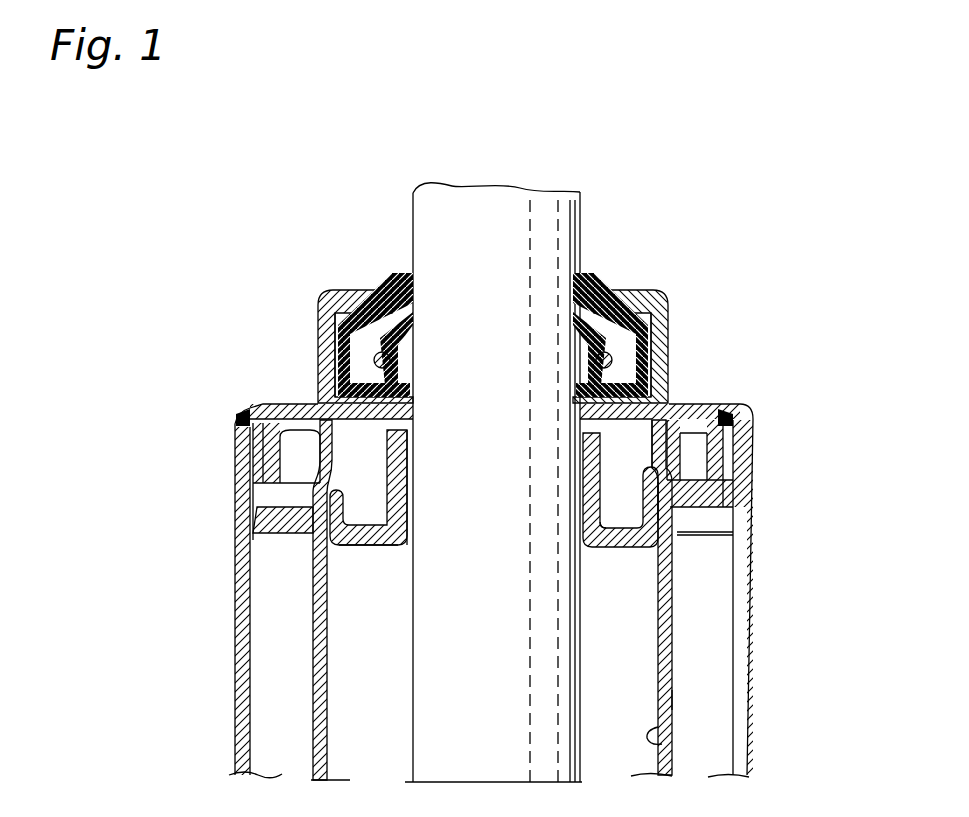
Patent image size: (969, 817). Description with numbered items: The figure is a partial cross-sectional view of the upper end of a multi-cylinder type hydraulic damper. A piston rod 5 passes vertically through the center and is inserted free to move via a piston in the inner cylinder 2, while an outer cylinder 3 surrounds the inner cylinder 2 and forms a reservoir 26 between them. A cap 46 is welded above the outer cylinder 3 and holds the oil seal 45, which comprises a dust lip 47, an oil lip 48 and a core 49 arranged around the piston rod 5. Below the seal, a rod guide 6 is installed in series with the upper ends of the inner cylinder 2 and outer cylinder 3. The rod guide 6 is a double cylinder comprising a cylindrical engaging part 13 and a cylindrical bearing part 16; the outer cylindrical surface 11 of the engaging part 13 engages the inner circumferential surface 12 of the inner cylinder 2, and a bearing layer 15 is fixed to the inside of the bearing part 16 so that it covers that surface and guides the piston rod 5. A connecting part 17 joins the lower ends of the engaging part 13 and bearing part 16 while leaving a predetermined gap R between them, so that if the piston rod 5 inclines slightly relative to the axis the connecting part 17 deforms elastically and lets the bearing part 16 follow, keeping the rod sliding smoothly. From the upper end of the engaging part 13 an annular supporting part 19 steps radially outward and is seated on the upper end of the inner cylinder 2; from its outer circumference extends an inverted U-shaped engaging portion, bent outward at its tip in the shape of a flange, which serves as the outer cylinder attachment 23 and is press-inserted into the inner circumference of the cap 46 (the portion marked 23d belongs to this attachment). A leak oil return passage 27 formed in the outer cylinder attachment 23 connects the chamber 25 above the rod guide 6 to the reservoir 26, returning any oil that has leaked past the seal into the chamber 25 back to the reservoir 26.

The piston rod 5 is at (507, 217).
The oil seal 45 is at (594, 268).
The dust lip 47 is at (600, 290).
The oil lip 48 is at (594, 350).
The core 49 is at (672, 308).
The cap 46 is at (672, 350).
The chamber 25 is at (343, 442).
The leak oil return passage 27 is at (262, 406).
The retainer flange 23d is at (267, 463).
The outer cylindrical surface 11 is at (313, 507).
The bearing layer 15 is at (420, 447).
The cylindrical bearing part 16 is at (398, 487).
The connecting part 17 is at (360, 542).
The gap R is at (627, 477).
The rod guide 6 is at (627, 553).
The annular supporting part 19 is at (651, 455).
The cylindrical engaging part 13 is at (658, 495).
The outer cylinder attachment 23 is at (718, 456).
The outer cylinder 3 is at (756, 585).
The inner cylinder 2 is at (667, 657).
The reservoir 26 is at (713, 700).
The inner circumferential surface 12 is at (656, 729).